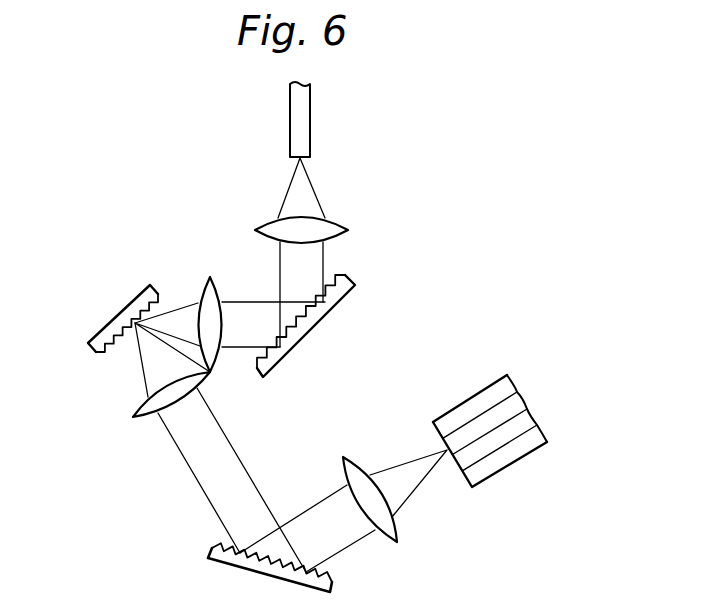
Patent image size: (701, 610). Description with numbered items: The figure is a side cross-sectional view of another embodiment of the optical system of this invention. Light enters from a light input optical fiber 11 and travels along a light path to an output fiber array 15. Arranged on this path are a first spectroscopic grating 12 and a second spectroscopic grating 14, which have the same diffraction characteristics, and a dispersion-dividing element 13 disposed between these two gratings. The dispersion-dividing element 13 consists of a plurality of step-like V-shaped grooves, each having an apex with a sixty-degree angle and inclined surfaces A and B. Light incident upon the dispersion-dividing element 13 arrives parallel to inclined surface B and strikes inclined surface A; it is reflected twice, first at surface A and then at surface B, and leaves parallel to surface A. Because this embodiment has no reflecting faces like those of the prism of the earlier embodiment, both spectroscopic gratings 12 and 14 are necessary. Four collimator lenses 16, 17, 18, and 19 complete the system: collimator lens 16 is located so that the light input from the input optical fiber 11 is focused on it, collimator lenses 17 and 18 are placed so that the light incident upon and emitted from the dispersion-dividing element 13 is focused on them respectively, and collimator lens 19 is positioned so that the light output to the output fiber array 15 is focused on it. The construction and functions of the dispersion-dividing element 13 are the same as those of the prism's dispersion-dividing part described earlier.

The light input optical fiber 11 is at (311, 118).
The first spectroscopic grating 12 is at (356, 292).
The dispersion-dividing element 13 is at (108, 323).
The second spectroscopic grating 14 is at (208, 551).
The output fiber array 15 is at (505, 470).
The collimator lens 16 is at (349, 230).
The collimator lens 17 is at (215, 283).
The collimator lens 18 is at (130, 412).
The collimator lens 19 is at (397, 543).